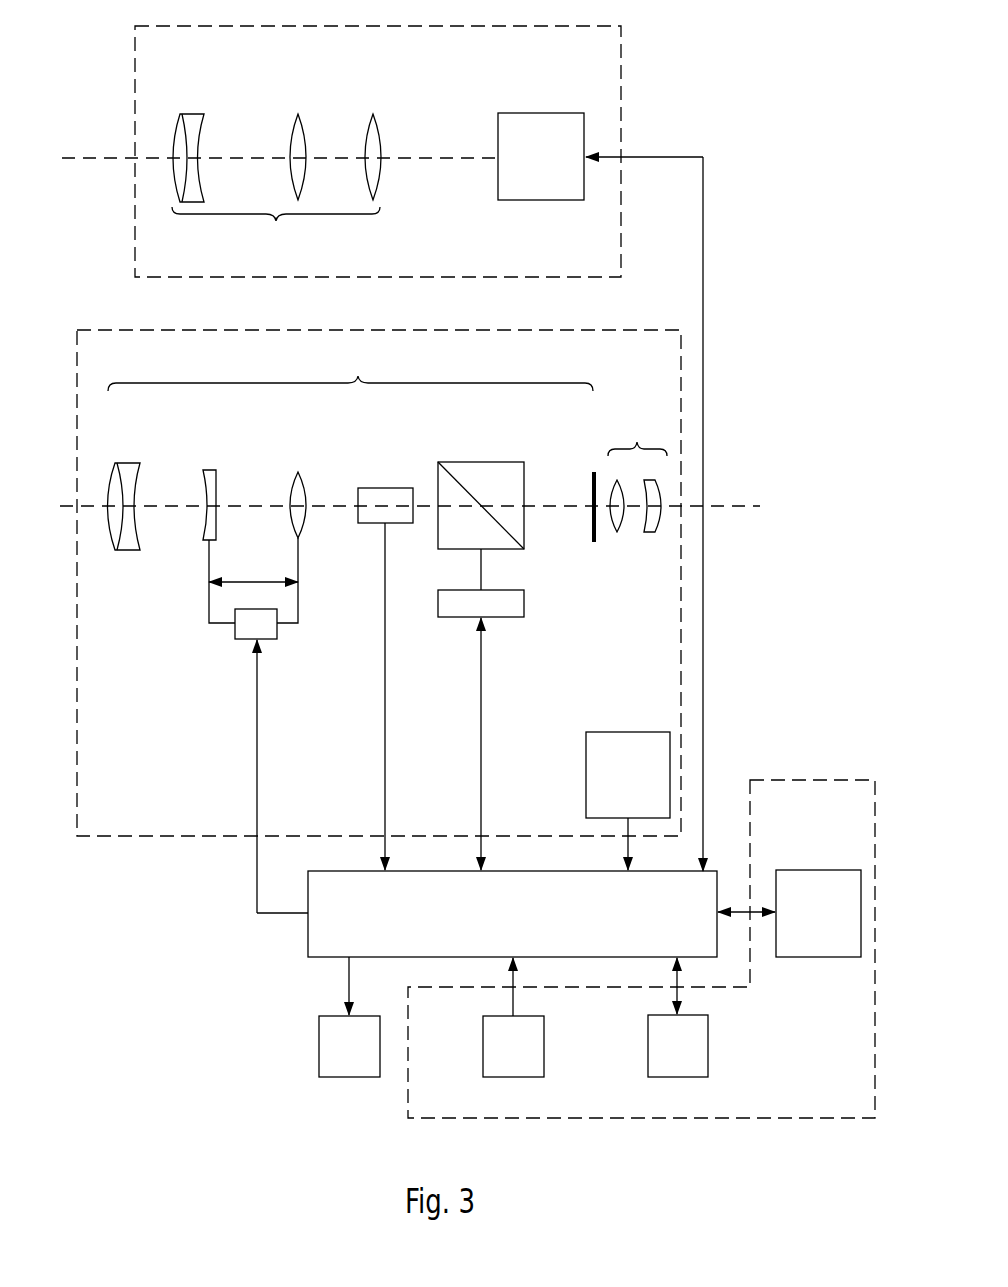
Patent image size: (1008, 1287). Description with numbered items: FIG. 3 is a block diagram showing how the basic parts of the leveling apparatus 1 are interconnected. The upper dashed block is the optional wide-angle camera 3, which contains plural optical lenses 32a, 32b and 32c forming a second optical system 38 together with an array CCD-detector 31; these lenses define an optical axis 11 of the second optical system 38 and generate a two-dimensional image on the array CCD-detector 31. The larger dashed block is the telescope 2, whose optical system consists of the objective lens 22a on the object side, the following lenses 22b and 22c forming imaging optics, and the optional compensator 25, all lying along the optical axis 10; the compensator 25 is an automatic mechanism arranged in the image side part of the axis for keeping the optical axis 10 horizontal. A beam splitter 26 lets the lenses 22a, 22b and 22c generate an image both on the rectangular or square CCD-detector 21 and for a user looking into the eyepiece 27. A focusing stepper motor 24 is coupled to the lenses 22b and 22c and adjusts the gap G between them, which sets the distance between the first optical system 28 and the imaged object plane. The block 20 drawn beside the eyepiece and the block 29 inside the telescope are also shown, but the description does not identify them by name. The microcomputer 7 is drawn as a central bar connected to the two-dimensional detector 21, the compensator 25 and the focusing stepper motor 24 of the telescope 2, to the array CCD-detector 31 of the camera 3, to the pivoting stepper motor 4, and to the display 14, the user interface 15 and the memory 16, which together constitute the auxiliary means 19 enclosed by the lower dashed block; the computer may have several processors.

The leveling apparatus 1 is at (792, 347).
The telescope 2 is at (140, 838).
The wide-angle camera 3 is at (622, 60).
The pivoting stepper motor 4 is at (319, 1047).
The microcomputer 7 is at (308, 941).
The optical axis 10 is at (746, 503).
The optical axis of the second optical system 11 is at (81, 156).
The display 14 is at (818, 869).
The user interface 15 is at (483, 1046).
The memory 16 is at (648, 1046).
The auxiliary means 19 is at (811, 779).
The aperture / filter element 20 is at (591, 532).
The CCD-detector 21 is at (507, 618).
The objective lens 22a is at (127, 462).
The optical lens 22b is at (210, 469).
The optical lens 22c is at (298, 471).
The focusing stepper motor 24 is at (261, 641).
The compensator 25 is at (386, 487).
The beam splitter 26 is at (481, 461).
The eyepiece 27 is at (637, 466).
The first optical system 28 is at (350, 365).
The sensor unit 29 is at (586, 775).
The array CCD-detector 31 is at (542, 113).
The optical lens 32a is at (188, 113).
The optical lens 32b is at (298, 113).
The optical lens 32c is at (373, 113).
The second optical system 38 is at (276, 233).
The gap G is at (253, 566).